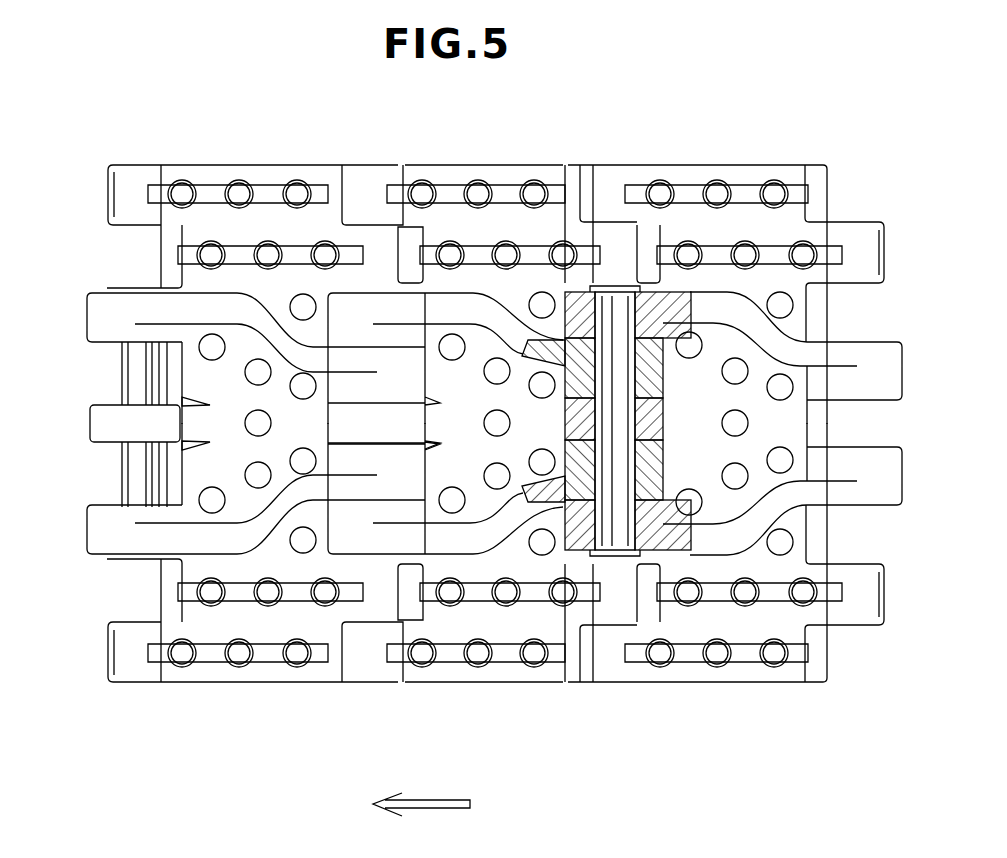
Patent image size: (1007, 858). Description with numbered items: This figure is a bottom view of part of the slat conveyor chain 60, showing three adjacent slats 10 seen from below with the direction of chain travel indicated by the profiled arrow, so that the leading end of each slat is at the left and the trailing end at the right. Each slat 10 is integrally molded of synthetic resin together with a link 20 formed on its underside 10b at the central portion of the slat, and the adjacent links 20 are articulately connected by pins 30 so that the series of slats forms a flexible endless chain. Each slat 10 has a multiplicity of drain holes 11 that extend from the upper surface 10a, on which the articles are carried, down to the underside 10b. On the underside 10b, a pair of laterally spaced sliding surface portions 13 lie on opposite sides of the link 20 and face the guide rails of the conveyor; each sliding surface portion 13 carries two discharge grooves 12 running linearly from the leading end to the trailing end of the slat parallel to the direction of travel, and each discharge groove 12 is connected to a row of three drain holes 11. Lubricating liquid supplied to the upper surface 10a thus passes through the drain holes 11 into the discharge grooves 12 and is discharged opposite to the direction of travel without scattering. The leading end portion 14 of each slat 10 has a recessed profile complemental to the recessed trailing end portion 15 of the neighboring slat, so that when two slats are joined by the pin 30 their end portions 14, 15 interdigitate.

The slat 10 is at (271, 676).
The upper surface 10a is at (442, 677).
The underside 10b is at (452, 165).
The drain hole 11 is at (185, 185).
The discharge groove 12 is at (213, 190).
The sliding surface portion 13 is at (203, 226).
The leading end portion 14 is at (96, 165).
The trailing end portion 15 is at (884, 250).
The link 20 is at (107, 527).
The pin 30 is at (612, 305).
The slat conveyor chain 60 is at (471, 396).